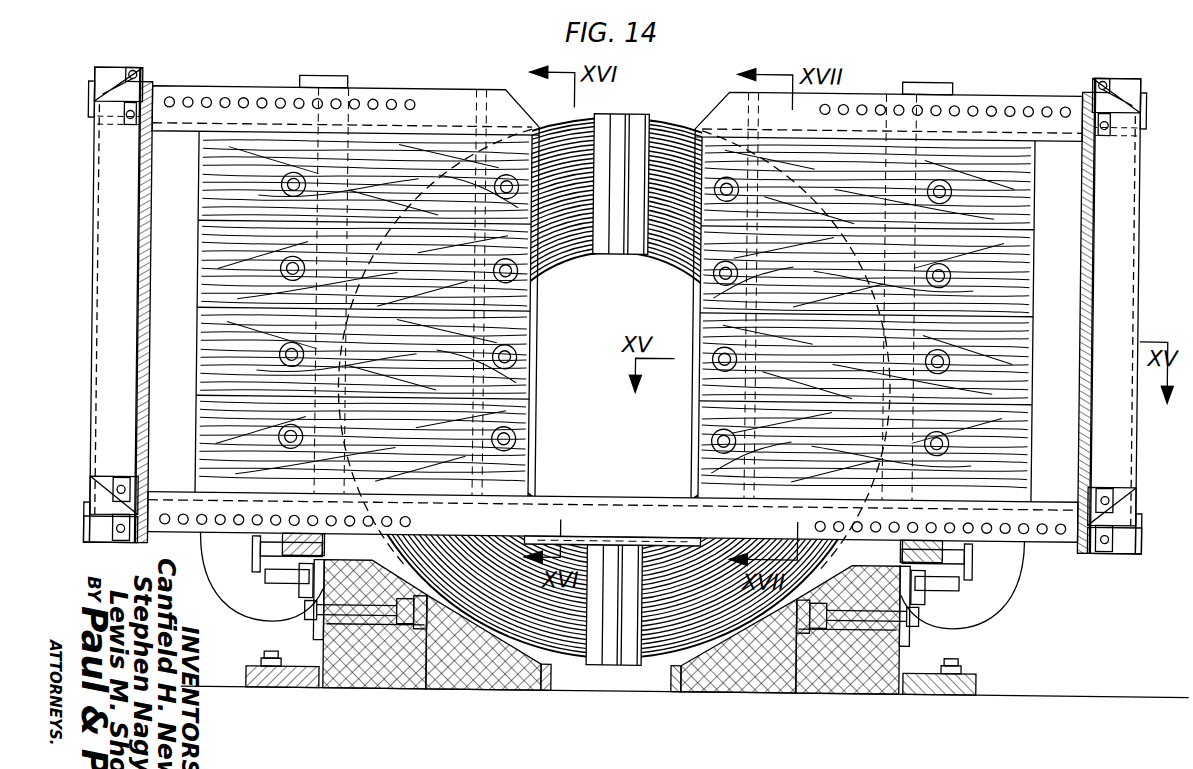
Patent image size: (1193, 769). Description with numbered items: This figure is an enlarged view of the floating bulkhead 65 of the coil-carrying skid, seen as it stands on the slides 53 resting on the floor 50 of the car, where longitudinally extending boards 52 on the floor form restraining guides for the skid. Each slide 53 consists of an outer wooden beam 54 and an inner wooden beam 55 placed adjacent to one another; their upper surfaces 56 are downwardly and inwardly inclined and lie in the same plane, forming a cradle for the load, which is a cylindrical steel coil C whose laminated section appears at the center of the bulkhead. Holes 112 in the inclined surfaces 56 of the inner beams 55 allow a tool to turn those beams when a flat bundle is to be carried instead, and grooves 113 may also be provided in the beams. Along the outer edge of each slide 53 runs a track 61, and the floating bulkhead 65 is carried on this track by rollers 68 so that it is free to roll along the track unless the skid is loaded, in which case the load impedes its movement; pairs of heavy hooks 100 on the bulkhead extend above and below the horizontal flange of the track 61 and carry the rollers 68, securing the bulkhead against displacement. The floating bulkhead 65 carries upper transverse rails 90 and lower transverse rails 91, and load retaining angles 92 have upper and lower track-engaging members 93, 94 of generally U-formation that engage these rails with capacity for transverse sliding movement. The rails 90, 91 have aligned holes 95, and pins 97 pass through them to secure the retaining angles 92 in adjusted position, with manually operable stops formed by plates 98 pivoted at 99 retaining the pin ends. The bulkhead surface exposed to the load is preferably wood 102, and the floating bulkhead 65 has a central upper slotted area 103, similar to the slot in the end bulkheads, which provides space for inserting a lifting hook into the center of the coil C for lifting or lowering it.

The floor 50 is at (1086, 690).
The longitudinally extending boards 52 is at (292, 694).
The slide 53 is at (545, 704).
The outer beam 54 is at (388, 682).
The inner beam 55 is at (478, 682).
The upper surfaces 56 is at (462, 542).
The track 61 is at (318, 628).
The floating bulkhead 65 is at (512, 80).
The rollers 68 is at (256, 556).
The upper transverse rails 90 is at (258, 97).
The lower transverse rails 91 is at (178, 486).
The load retaining angles 92 is at (160, 275).
The upper track-engaging member 93 is at (106, 84).
The lower track-engaging member 94 is at (86, 536).
The holes 95 is at (205, 103).
The pins 97 is at (150, 100).
The plates 98 is at (108, 88).
The pivot 99 is at (132, 84).
The hooks 100 is at (262, 606).
The wood 102 is at (422, 330).
The central upper slotted area 103 is at (688, 324).
The holes 112 is at (486, 640).
The grooves 113 is at (556, 678).
The coil C is at (662, 128).